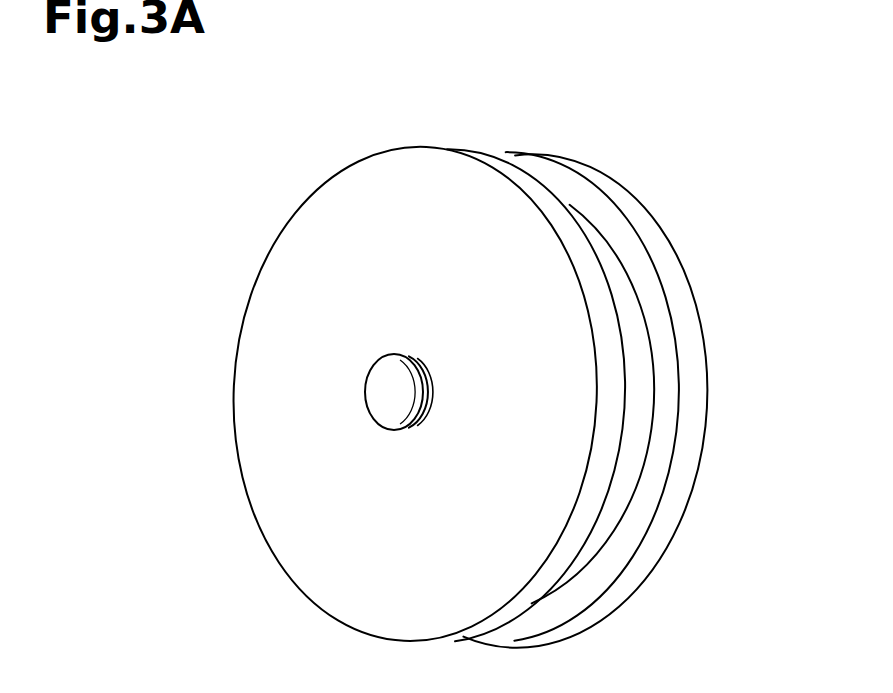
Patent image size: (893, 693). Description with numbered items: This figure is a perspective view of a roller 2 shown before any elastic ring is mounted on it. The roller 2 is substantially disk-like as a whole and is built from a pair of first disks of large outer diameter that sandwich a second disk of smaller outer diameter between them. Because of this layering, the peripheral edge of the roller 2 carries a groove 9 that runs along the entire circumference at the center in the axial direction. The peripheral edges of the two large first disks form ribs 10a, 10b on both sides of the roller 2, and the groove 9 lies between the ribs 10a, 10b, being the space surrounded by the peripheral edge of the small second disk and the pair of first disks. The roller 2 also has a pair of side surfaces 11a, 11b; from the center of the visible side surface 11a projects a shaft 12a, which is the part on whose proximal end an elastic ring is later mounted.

The roller 2 is at (221, 236).
The groove 9 is at (642, 397).
The rib 10a is at (441, 150).
The rib 10b is at (594, 181).
The side surface 11a is at (297, 544).
The side surface 11b is at (679, 546).
The shaft 12a is at (380, 388).